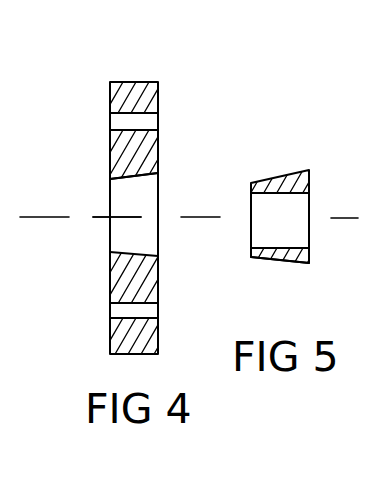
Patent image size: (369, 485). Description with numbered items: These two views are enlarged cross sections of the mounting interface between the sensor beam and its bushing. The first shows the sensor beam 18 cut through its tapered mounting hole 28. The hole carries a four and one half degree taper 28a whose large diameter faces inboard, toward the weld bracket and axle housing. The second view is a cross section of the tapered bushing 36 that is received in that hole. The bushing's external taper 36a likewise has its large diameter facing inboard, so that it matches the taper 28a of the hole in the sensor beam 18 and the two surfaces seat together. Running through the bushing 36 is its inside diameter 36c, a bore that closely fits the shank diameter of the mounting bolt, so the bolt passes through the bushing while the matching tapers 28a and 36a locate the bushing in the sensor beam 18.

In FIG. 4, the sensor beam 18 is at (134, 79).
In FIG. 4, the tapered hole 28 is at (109, 217).
In FIG. 4, the taper 28a is at (136, 178).
In FIG. 5, the tapered bushing 36 is at (279, 172).
In FIG. 5, the taper 36a is at (266, 260).
In FIG. 5, the inside diameter 36c is at (297, 248).